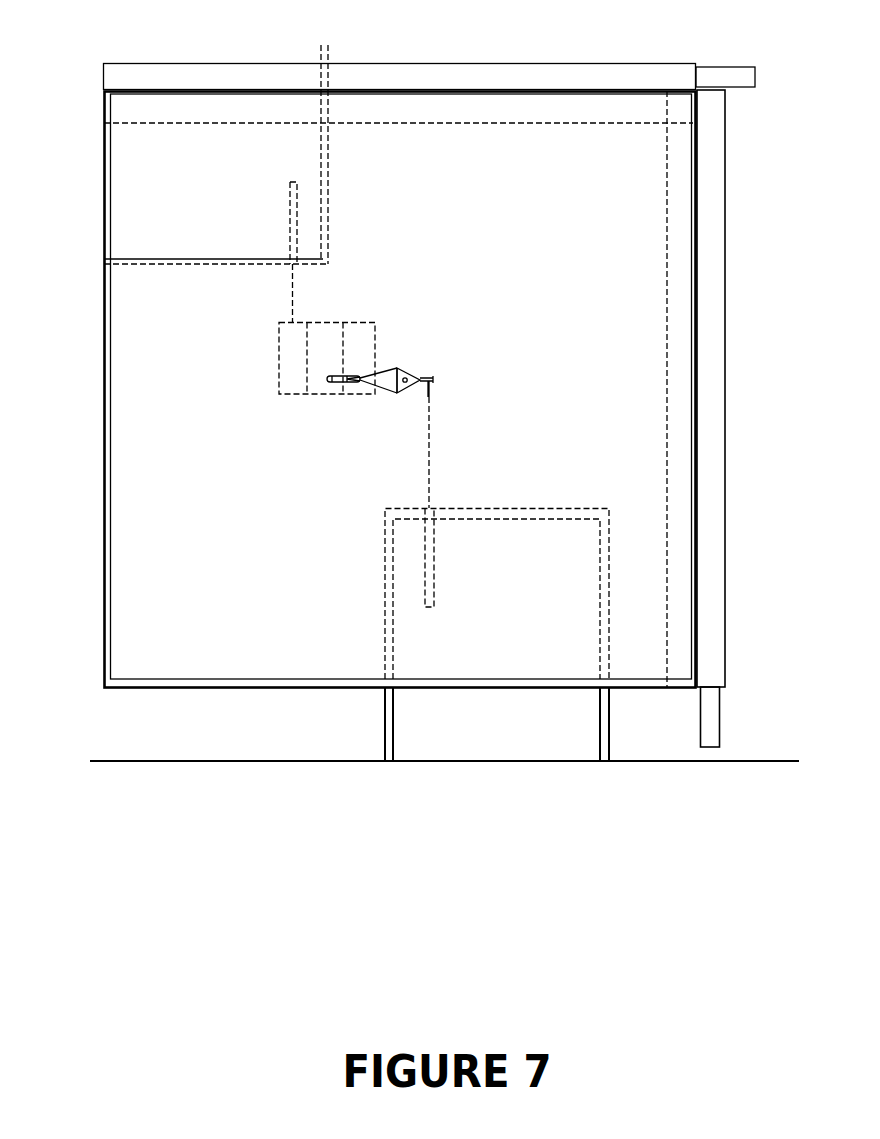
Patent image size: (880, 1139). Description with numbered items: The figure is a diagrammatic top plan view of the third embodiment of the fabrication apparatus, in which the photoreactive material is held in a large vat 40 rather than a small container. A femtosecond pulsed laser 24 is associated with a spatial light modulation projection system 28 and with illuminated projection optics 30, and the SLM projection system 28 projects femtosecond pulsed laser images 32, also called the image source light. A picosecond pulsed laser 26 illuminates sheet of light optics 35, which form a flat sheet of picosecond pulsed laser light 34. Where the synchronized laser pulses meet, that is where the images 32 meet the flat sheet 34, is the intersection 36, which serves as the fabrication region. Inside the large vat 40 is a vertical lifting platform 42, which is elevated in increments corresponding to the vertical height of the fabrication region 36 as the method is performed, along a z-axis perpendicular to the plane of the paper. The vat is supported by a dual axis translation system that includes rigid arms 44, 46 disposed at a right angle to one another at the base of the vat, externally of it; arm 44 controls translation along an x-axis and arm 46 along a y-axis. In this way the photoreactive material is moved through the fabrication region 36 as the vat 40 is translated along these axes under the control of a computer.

The femtosecond pulsed laser 24 is at (130, 188).
The picosecond pulsed laser 26 is at (515, 530).
The spatial light modulation (SLM) projection system 28 is at (318, 390).
The projection optics 30 is at (335, 383).
The femtosecond pulsed laser images 32 is at (347, 379).
The flat sheet of picosecond pulsed laser light 34 is at (385, 379).
The sheet of light optics 35 is at (408, 377).
The intersection 36 is at (363, 378).
The large vat 40 is at (223, 678).
The vertical lifting platform 42 is at (667, 275).
The rigid arm 44 is at (560, 75).
The rigid arm 46 is at (716, 205).